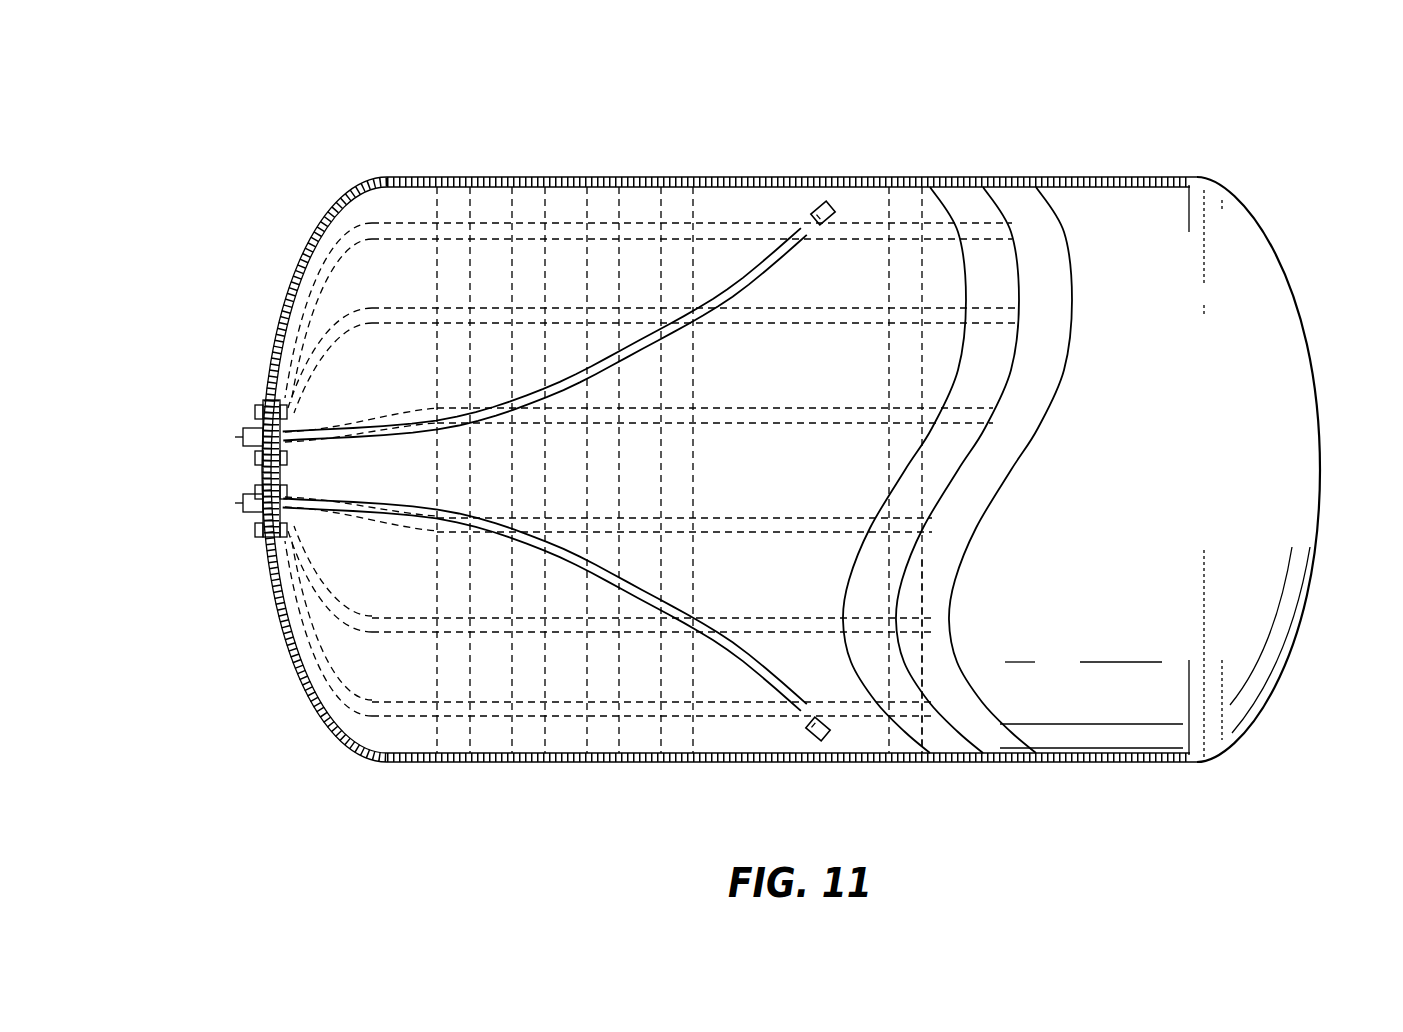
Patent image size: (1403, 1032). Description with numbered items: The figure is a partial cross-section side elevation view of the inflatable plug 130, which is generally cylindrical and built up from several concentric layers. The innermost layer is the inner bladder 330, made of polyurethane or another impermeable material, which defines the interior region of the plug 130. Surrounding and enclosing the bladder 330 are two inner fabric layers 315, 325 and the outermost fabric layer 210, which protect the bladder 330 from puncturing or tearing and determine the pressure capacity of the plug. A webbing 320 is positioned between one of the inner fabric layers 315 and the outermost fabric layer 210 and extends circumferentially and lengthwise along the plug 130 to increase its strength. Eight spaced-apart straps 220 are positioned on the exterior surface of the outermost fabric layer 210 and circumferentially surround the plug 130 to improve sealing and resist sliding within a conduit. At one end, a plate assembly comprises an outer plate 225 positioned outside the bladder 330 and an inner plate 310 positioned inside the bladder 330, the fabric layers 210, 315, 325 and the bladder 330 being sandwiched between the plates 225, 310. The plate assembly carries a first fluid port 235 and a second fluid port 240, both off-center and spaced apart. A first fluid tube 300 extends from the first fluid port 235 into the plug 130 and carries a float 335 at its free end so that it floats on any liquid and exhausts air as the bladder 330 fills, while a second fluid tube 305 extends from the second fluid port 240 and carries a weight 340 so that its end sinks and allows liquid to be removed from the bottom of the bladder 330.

The inflatable plug 130 is at (1076, 110).
The outermost fabric layer 210 is at (348, 228).
The straps 220 is at (455, 200).
The outer plate 225 is at (270, 400).
The first fluid port 235 is at (243, 436).
The second fluid port 240 is at (243, 503).
The first fluid tube 300 is at (729, 290).
The second fluid tube 305 is at (645, 592).
The inner plate 310 is at (285, 540).
The inner fabric layer 315 is at (945, 745).
The webbing 320 is at (915, 700).
The inner fabric layer 325 is at (990, 735).
The inner bladder 330 is at (1242, 632).
The float 335 is at (828, 204).
The weight 340 is at (813, 738).